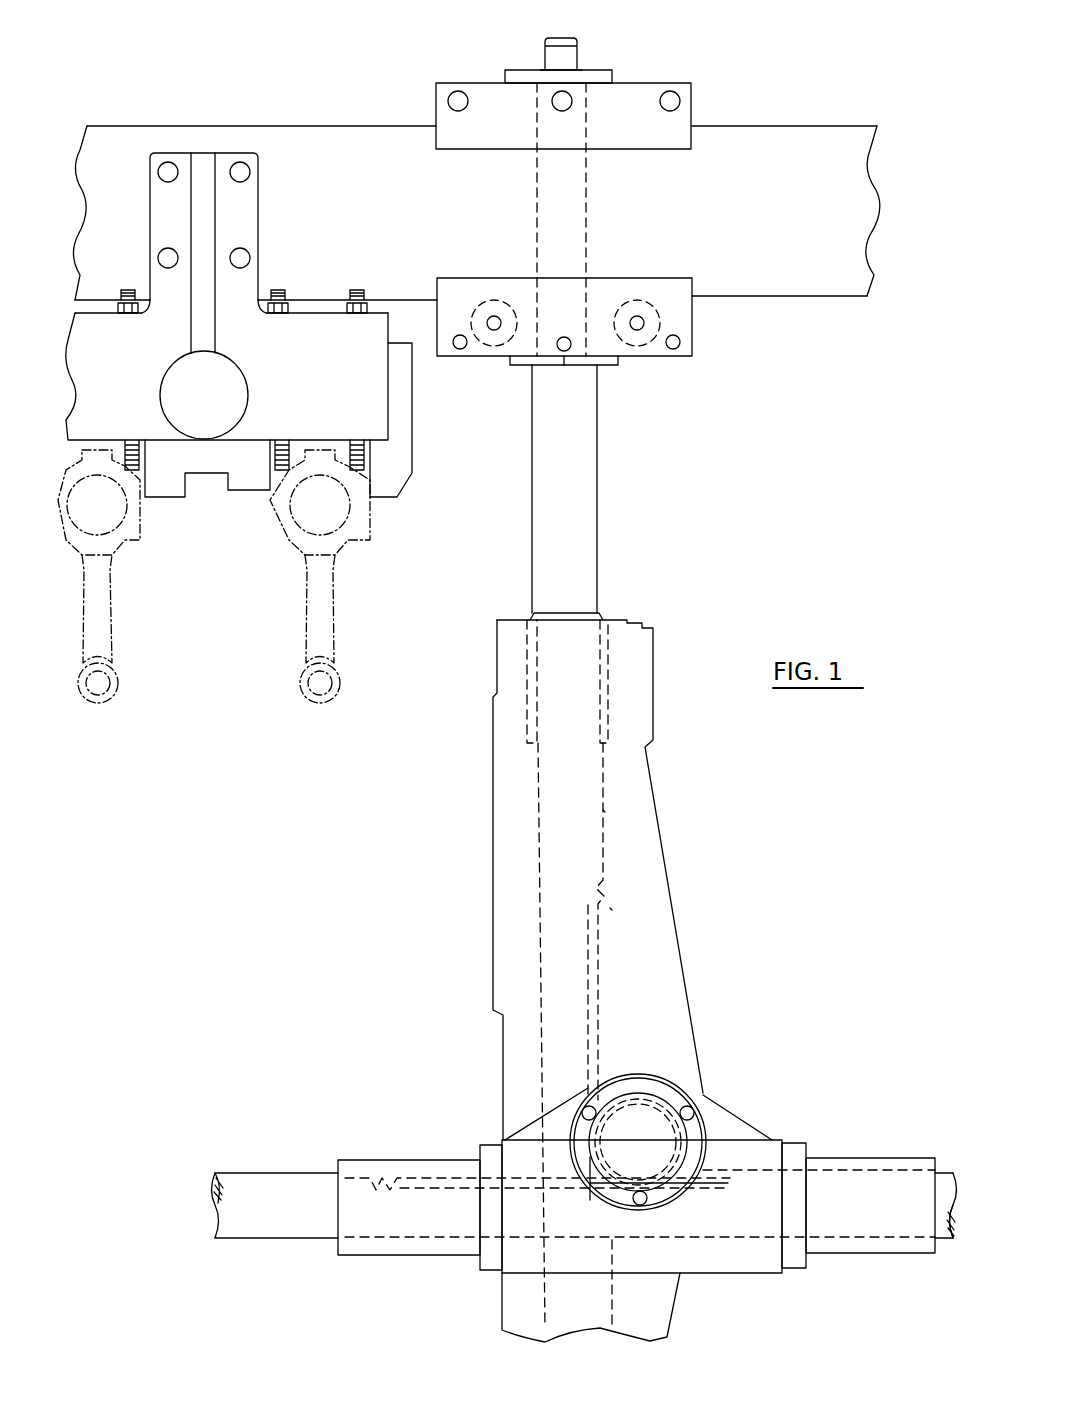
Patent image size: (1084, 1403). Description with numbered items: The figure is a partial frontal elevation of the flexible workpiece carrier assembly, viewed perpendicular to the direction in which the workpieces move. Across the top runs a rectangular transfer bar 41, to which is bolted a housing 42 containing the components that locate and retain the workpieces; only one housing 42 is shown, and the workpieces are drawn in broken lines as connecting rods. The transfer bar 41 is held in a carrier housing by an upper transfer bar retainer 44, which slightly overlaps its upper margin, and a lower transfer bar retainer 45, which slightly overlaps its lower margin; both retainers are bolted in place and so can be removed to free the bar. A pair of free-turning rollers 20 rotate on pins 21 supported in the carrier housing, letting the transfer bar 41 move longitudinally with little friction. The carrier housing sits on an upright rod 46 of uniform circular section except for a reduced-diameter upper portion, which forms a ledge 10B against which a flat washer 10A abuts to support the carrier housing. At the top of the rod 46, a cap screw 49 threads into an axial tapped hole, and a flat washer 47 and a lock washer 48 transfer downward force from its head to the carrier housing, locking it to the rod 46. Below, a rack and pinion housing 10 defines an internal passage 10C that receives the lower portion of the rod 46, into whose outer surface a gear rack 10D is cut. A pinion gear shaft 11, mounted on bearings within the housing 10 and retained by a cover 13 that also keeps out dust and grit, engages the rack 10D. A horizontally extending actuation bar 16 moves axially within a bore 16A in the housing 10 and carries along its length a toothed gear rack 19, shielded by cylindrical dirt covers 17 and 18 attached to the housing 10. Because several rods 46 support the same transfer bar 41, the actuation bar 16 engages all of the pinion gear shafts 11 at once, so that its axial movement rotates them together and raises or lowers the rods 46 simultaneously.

The rack and pinion housing 10 is at (678, 948).
The flat washer 10A is at (617, 366).
The ledge 10B is at (545, 366).
The internal passage 10C is at (605, 812).
The gear rack 10D is at (612, 908).
The pinion gear shaft 11 is at (635, 1110).
The cover 13 is at (672, 1092).
The actuation bar 16 is at (283, 1173).
The bore 16A is at (722, 1230).
The cylindrical dirt cover 17 is at (403, 1255).
The cylindrical dirt cover 18 is at (866, 1158).
The toothed gear rack 19 is at (432, 1178).
The free-turning roller 20 is at (478, 308).
The pin 21 is at (494, 322).
The transfer bar 41 is at (792, 132).
The housing 42 is at (183, 153).
The upper transfer bar retainer 44 is at (693, 105).
The lower transfer bar retainer 45 is at (672, 278).
The rod 46 is at (590, 236).
The flat washer 47 is at (612, 78).
The lock washer 48 is at (583, 70).
The cap screw 49 is at (577, 48).